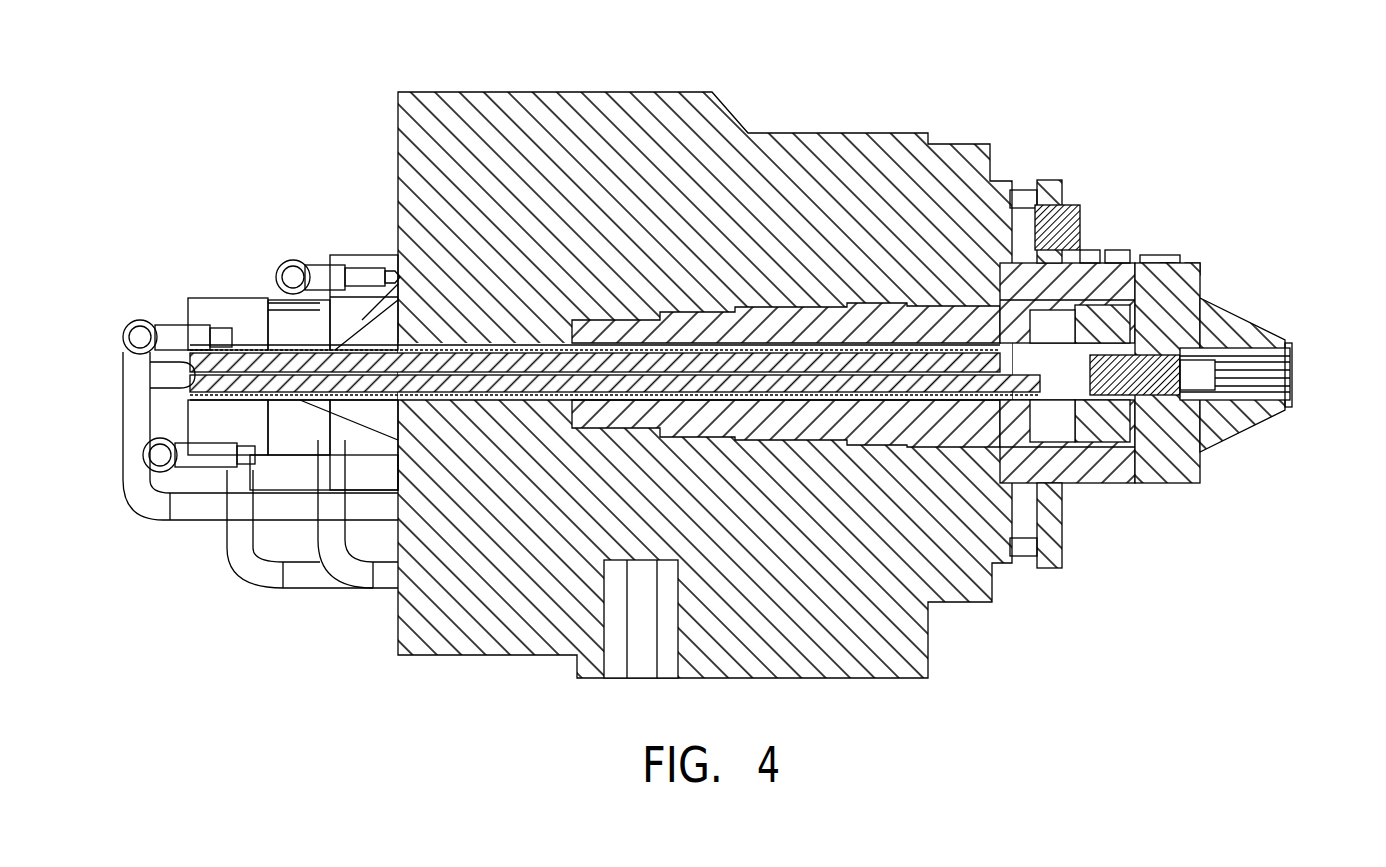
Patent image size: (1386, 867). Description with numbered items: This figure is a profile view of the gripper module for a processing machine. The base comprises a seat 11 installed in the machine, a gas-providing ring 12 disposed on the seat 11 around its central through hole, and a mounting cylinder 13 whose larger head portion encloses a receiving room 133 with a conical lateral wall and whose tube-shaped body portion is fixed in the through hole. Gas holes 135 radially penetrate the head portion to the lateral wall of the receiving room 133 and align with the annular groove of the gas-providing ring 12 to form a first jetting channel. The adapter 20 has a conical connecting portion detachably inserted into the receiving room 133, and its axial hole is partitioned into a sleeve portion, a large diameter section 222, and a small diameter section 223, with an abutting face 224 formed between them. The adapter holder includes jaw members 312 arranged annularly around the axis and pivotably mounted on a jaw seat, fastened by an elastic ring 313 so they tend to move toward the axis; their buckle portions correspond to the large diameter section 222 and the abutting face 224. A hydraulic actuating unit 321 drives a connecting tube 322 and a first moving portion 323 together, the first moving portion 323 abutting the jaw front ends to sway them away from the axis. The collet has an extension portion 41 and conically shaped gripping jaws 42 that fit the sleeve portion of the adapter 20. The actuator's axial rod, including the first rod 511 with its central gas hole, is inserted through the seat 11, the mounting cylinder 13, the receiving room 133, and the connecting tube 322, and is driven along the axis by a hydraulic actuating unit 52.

The seat 11 is at (985, 598).
The gas-providing ring 12 is at (1050, 570).
The mounting cylinder 13 is at (1100, 500).
The receiving room 133 is at (1130, 505).
The gas holes 135 is at (1085, 500).
The adapter 20 is at (1193, 487).
The extension portion 41 is at (1205, 440).
The gripping jaws 42 is at (1292, 405).
The hydraulic actuating unit 52 is at (232, 330).
The hydraulic actuating unit 321 is at (372, 317).
The connecting tube 322 is at (825, 330).
The first moving portion 323 is at (1205, 266).
The elastic ring 313 is at (1088, 250).
The jaw members 312 is at (1160, 255).
The abutting face 224 is at (1117, 250).
The small diameter section 223 is at (1022, 265).
The large diameter section 222 is at (1200, 266).
The first rod 511 is at (535, 382).